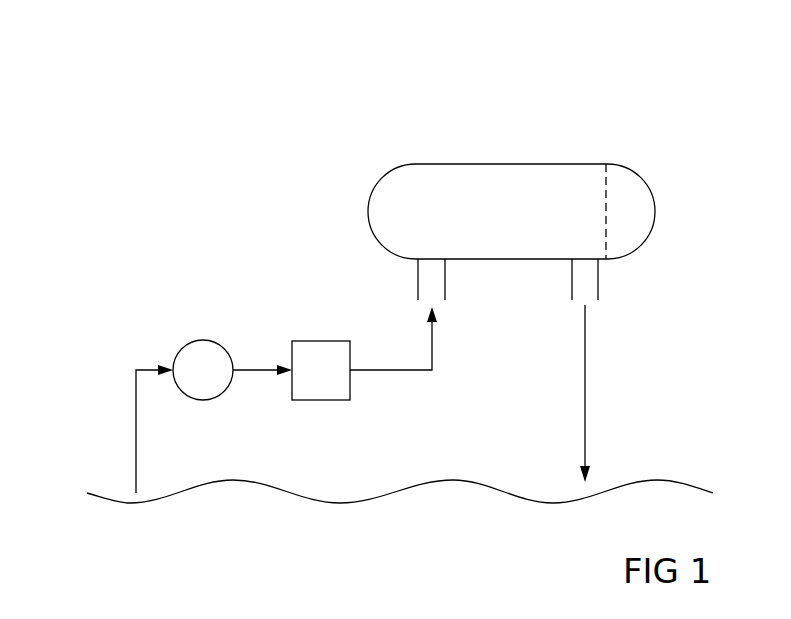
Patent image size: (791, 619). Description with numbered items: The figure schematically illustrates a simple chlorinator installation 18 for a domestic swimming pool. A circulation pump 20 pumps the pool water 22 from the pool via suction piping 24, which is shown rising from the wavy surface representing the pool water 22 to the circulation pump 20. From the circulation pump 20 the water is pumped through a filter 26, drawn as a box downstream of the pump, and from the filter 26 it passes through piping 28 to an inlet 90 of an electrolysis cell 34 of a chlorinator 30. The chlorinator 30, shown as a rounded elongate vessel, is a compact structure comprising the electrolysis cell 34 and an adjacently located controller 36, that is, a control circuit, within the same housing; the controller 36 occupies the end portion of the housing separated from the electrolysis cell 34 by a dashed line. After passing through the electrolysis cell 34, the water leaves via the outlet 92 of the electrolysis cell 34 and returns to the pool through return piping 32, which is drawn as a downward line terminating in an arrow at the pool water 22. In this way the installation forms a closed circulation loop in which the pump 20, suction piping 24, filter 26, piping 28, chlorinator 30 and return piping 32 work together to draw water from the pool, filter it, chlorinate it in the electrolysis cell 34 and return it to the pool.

The chlorinator installation 18 is at (352, 118).
The circulation pump 20 is at (203, 363).
The pool water 22 is at (464, 546).
The suction piping 24 is at (135, 418).
The filter 26 is at (302, 355).
The piping 28 is at (400, 370).
The chlorinator 30 is at (480, 140).
The return piping 32 is at (585, 385).
The electrolysis cell 34 is at (388, 208).
The controller 36 is at (628, 188).
The inlet 90 is at (430, 274).
The outlet 92 is at (588, 275).